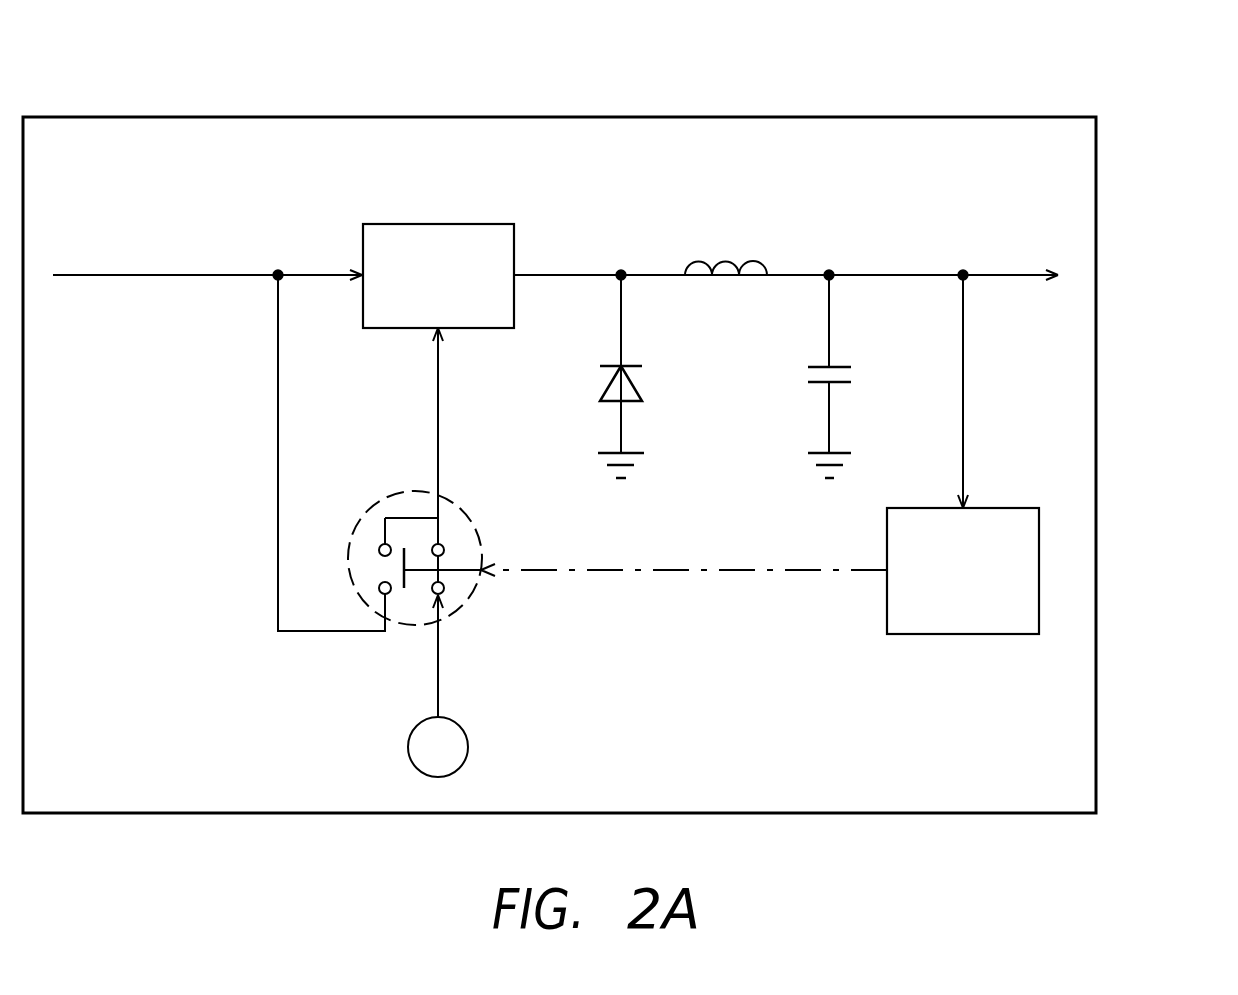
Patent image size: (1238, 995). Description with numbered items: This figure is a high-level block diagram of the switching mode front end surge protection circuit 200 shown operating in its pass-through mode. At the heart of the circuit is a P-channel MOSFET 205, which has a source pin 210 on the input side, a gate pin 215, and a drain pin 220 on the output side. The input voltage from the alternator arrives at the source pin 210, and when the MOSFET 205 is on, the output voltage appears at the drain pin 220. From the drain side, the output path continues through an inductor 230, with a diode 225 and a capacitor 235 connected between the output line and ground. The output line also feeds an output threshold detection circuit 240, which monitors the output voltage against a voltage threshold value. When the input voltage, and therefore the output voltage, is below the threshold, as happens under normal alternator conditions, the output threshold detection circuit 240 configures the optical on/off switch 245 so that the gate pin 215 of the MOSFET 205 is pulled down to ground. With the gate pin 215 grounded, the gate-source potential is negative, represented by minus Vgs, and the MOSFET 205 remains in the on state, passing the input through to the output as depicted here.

The switching mode front end surge protection circuit 200 is at (1098, 115).
The MOSFET 205 is at (388, 224).
The source pin 210 is at (333, 238).
The gate pin 215 is at (462, 361).
The drain pin 220 is at (532, 240).
The diode 225 is at (633, 383).
The inductor 230 is at (727, 262).
The capacitor 235 is at (840, 365).
The output threshold detection circuit 240 is at (887, 632).
The optical on/off switch 245 is at (467, 600).